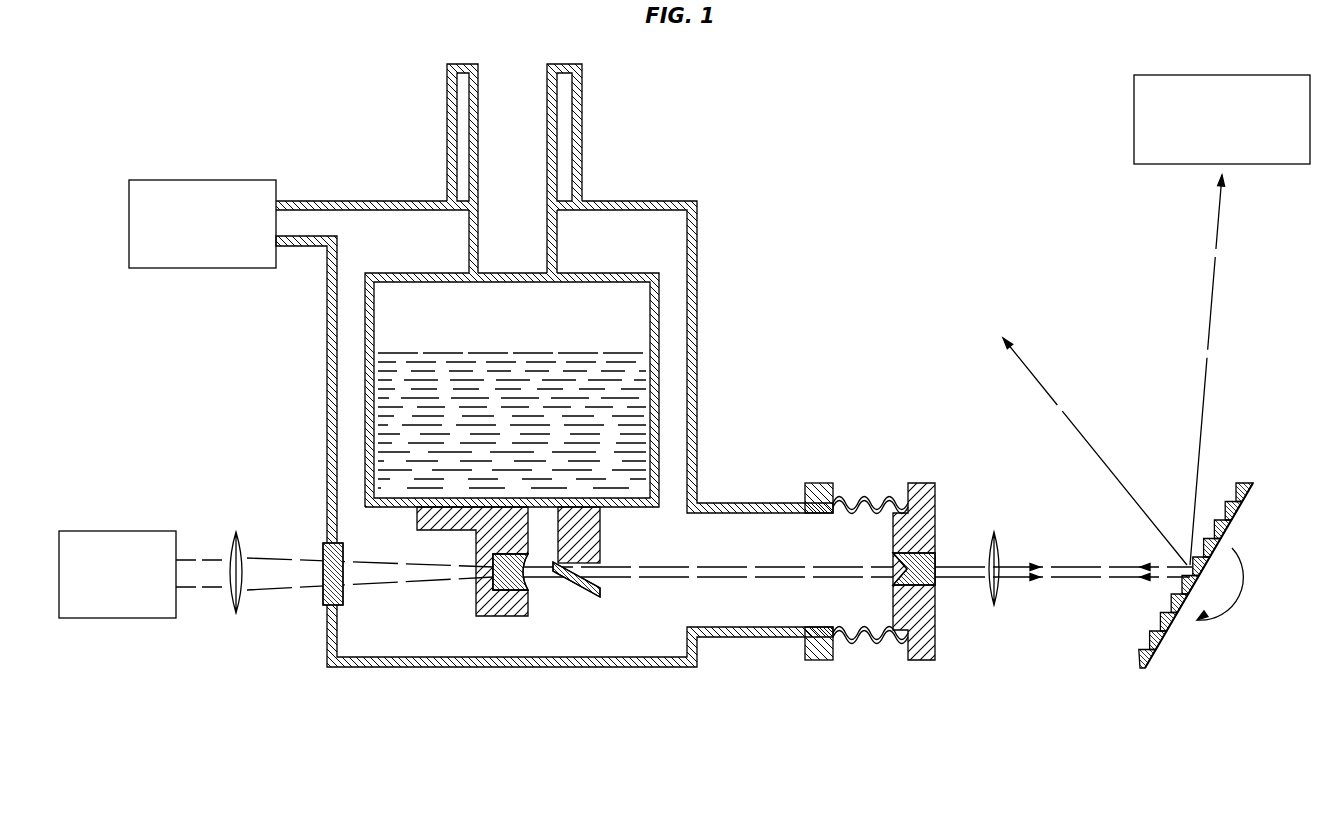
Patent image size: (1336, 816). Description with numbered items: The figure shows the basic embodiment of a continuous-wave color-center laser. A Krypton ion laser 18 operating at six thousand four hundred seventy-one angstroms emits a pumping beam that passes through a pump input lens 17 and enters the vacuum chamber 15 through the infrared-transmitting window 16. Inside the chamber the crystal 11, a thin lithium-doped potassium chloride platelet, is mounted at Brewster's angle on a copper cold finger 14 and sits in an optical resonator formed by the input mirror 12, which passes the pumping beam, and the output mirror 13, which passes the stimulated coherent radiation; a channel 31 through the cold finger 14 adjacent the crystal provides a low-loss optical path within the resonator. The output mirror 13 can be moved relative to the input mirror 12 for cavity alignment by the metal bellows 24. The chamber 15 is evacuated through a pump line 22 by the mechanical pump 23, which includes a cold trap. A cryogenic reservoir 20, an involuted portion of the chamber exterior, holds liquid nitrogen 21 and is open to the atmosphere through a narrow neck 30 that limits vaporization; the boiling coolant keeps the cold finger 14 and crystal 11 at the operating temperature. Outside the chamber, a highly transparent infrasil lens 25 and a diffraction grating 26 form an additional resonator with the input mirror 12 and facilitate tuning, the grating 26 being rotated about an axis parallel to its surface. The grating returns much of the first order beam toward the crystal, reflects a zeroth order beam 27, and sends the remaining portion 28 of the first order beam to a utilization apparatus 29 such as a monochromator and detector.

The crystal 11 is at (610, 632).
The input mirror 12 is at (528, 587).
The output mirror 13 is at (900, 570).
The copper cold finger 14 is at (600, 531).
The vacuum chamber 15 is at (697, 342).
The infrared-transmitting window 16 is at (323, 553).
The pump input lens 17 is at (243, 598).
The Krypton ion laser 18 is at (117, 531).
The cryogenic reservoir 20 is at (660, 300).
The liquid N2 21 is at (383, 443).
The pump line 22 is at (397, 225).
The mechanical pump 23 is at (208, 186).
The metal bellows 24 is at (870, 497).
The infrasil lens 25 is at (998, 594).
The diffraction grating 26 is at (1152, 657).
The 0th order beam 27 is at (1061, 410).
The remaining portion of the first order beam 28 is at (1212, 268).
The utilization apparatus 29 is at (1134, 121).
The narrow neck 30 is at (516, 74).
The channel 31 is at (601, 568).